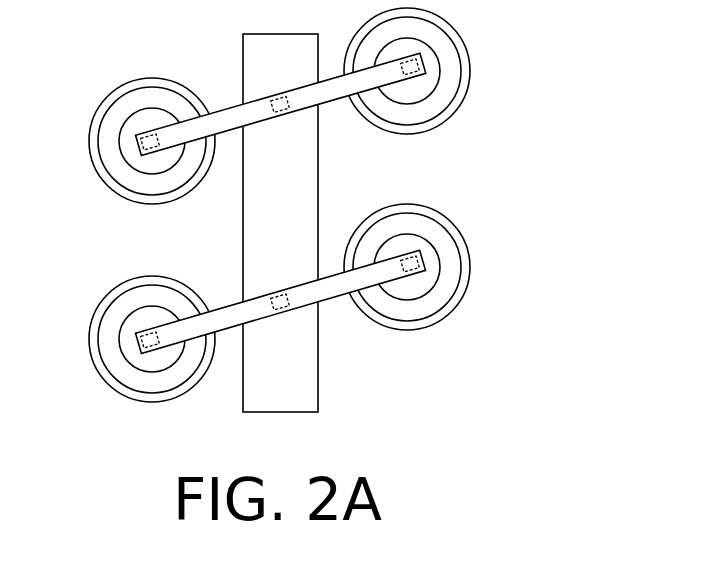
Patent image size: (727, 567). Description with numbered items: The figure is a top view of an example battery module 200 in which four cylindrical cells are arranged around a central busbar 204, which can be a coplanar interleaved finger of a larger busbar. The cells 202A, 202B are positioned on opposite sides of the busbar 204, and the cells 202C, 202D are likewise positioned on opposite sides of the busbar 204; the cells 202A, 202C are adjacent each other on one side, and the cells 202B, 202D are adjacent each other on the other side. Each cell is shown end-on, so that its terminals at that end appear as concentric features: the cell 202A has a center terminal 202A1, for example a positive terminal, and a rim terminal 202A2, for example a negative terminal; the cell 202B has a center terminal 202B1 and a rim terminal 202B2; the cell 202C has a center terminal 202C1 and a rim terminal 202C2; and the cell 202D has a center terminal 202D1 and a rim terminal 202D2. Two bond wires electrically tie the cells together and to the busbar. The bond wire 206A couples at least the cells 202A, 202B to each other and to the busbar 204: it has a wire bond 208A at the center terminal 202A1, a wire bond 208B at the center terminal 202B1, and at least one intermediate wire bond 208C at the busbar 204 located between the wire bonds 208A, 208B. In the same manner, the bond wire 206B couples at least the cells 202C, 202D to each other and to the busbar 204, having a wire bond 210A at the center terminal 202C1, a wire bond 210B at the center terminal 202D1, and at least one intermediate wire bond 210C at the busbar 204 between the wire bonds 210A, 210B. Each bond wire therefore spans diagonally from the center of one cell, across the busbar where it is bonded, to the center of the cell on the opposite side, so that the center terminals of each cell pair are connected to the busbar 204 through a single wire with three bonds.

The battery module 200 is at (670, 26).
The cell 202A is at (131, 364).
The center terminal 202A1 is at (173, 365).
The rim terminal 202A2 is at (126, 396).
The cell 202B is at (366, 296).
The center terminal 202B1 is at (376, 240).
The rim terminal 202B2 is at (392, 328).
The cell 202C is at (130, 166).
The center terminal 202C1 is at (173, 167).
The rim terminal 202C2 is at (126, 198).
The cell 202D is at (364, 98).
The center terminal 202D1 is at (378, 45).
The rim terminal 202D2 is at (392, 132).
The busbar 204 is at (302, 403).
The bond wire 206A is at (230, 286).
The bond wire 206B is at (230, 88).
The wire bond 208A is at (146, 342).
The wire bond 208B is at (420, 263).
The intermediate wire bond 208C is at (280, 310).
The wire bond 210A is at (146, 144).
The wire bond 210B is at (420, 66).
The intermediate wire bond 210C is at (280, 112).